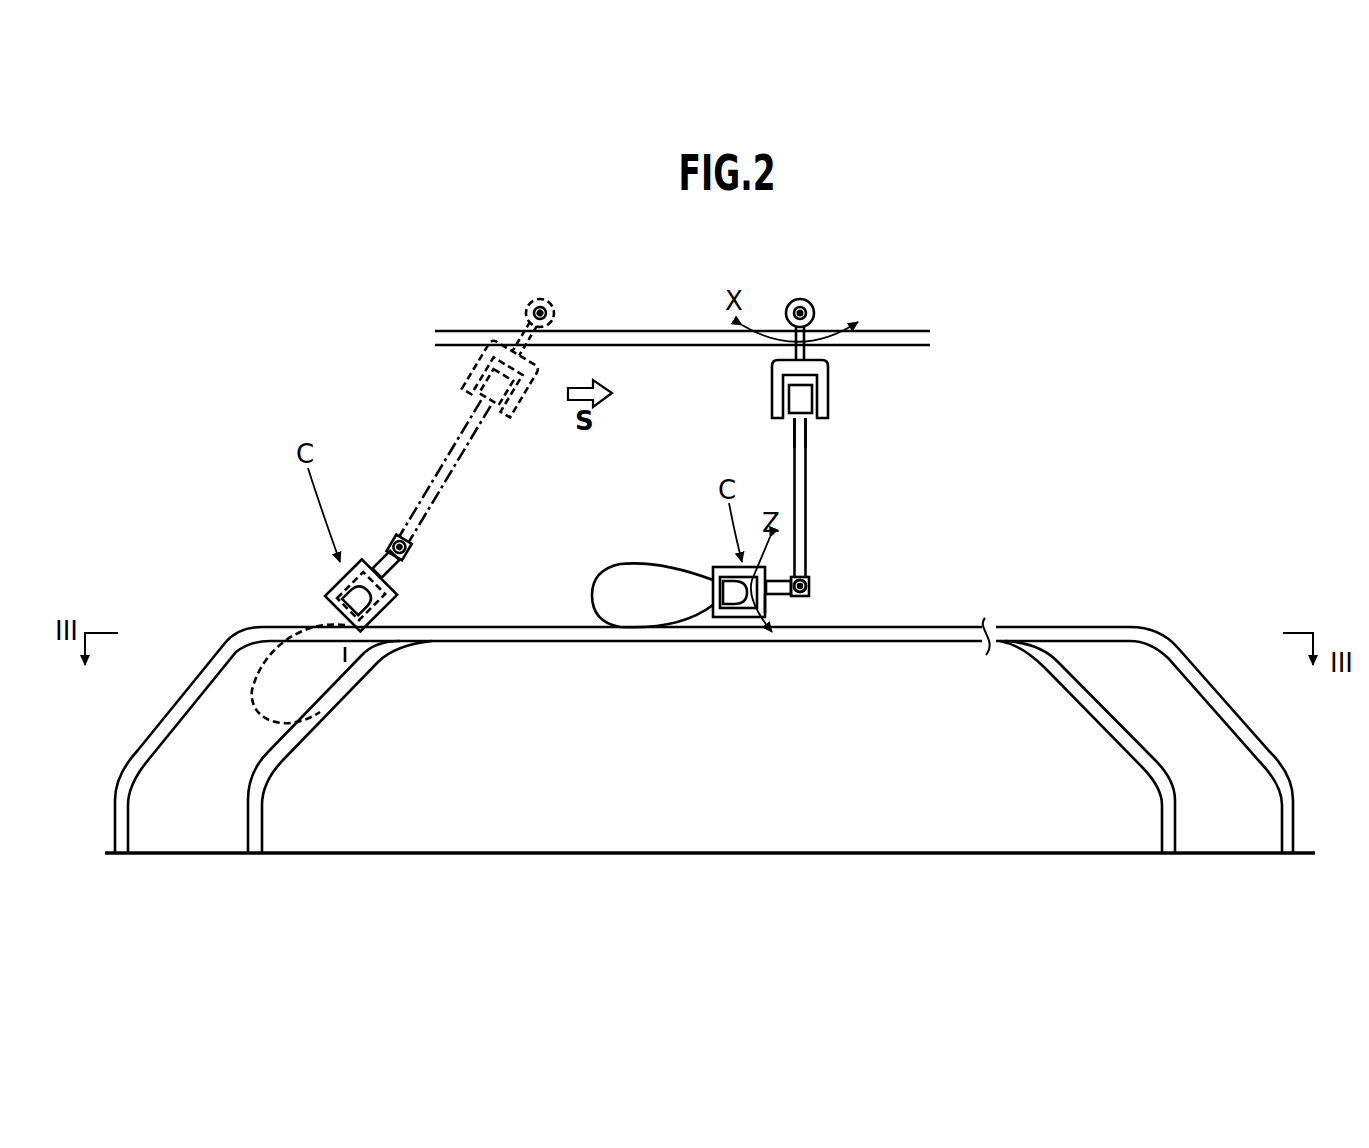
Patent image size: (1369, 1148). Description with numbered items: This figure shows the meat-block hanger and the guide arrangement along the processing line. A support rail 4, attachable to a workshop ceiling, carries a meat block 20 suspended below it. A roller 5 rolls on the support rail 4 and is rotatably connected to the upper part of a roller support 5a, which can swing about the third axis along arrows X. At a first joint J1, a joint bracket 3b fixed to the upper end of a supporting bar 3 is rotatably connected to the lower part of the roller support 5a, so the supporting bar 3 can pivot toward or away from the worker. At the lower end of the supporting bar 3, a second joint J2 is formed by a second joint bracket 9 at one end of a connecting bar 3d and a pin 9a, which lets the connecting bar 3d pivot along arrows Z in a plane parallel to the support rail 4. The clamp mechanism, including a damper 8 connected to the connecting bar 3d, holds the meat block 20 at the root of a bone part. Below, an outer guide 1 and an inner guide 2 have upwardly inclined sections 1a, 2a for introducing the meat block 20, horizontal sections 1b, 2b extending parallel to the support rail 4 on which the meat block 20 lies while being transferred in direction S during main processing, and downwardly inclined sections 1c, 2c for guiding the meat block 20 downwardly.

The outer guide 1 is at (704, 683).
The upwardly inclined section of outer guide 1a is at (200, 677).
The horizontal section of outer guide 1b is at (540, 625).
The downwardly inclined section of outer guide 1c is at (1224, 690).
The inner guide 2 is at (711, 747).
The upwardly inclined section of inner guide 2a is at (312, 724).
The horizontal section of inner guide 2b is at (608, 648).
The downwardly inclined section of inner guide 2c is at (1100, 710).
The supporting bar 3 is at (807, 480).
The joint bracket 3b is at (810, 414).
The connecting bar 3d is at (780, 600).
The support rail 4 is at (903, 332).
The roller 5 is at (814, 306).
The roller support 5a is at (774, 368).
The damper 8 is at (745, 618).
The second joint bracket 9 is at (810, 588).
The pin 9a is at (800, 598).
The meat block 20 is at (646, 562).
The first joint J1 is at (840, 390).
The second joint J2 is at (812, 578).